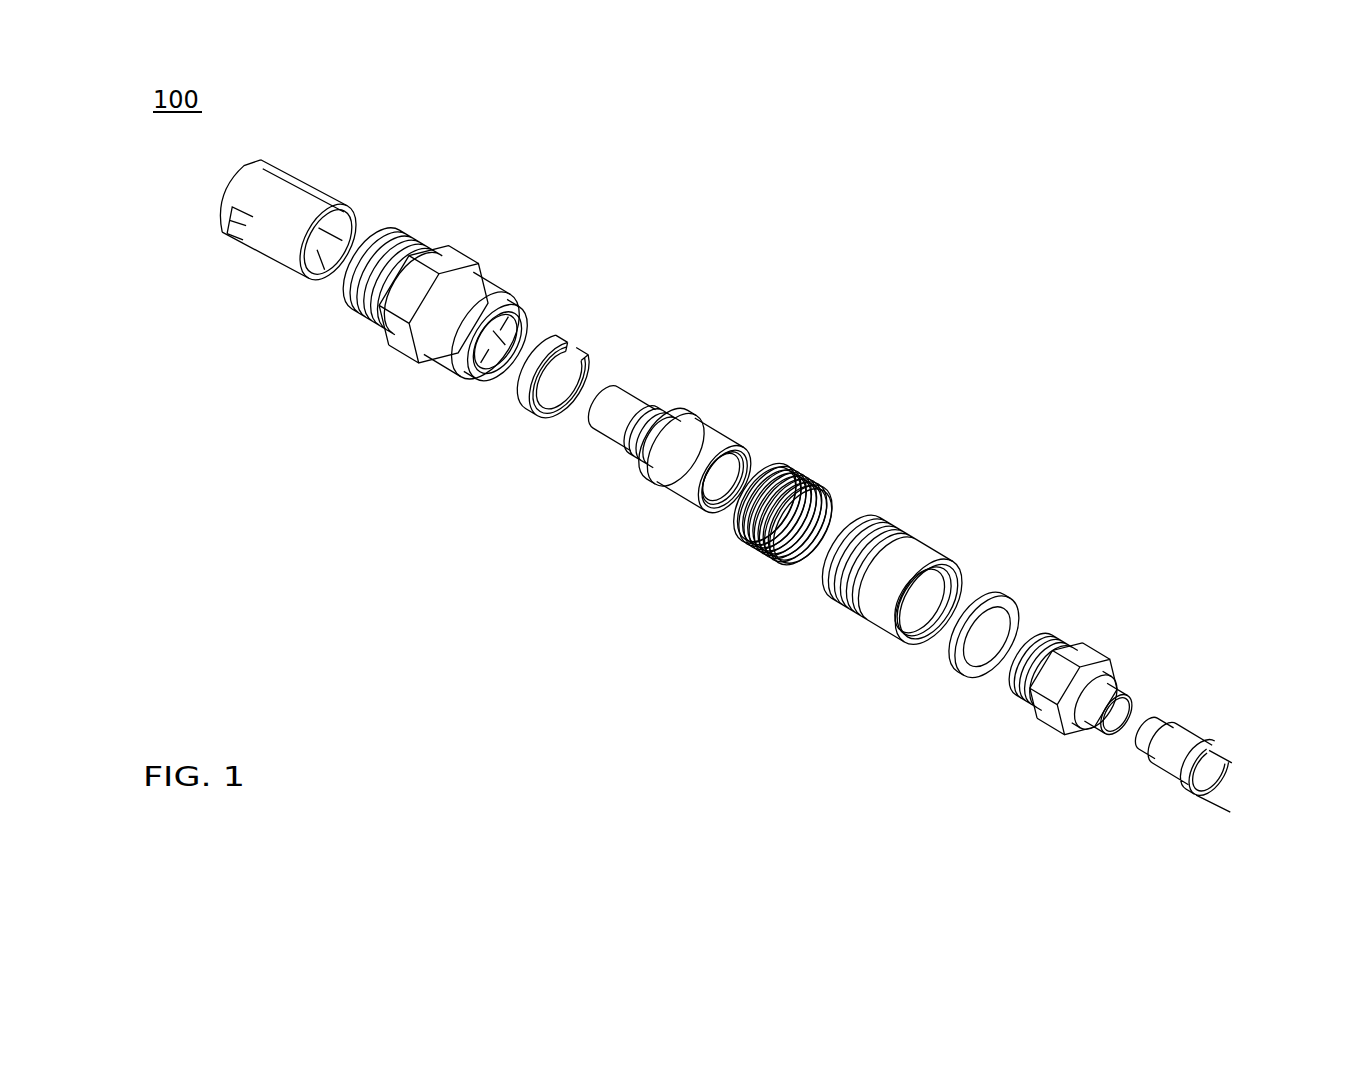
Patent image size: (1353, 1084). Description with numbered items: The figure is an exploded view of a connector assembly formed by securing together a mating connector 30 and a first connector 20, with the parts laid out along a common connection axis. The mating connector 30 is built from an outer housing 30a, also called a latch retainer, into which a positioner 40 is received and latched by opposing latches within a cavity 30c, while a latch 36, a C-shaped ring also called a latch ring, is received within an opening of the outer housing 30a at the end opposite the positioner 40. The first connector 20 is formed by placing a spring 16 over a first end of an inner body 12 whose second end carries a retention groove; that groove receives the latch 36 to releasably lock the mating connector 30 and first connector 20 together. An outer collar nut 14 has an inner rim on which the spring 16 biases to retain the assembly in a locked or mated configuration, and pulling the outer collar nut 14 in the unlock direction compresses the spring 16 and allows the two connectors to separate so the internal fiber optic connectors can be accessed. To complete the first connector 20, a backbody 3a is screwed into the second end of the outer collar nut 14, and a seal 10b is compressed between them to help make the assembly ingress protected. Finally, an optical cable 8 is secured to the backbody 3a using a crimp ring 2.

The mating connector 30 is at (528, 457).
The positioner 40 is at (318, 192).
The outer housing 30a is at (545, 321).
The cavity 30c is at (482, 343).
The latch 36 is at (587, 320).
The first connector 20 is at (1077, 773).
The inner body 12 is at (617, 365).
The spring 16 is at (812, 468).
The outer collar nut 14 is at (917, 512).
The seal 10b is at (1020, 590).
The backbody 3a is at (1100, 636).
The crimp ring 2 is at (1185, 739).
The optical cable 8 is at (1237, 783).